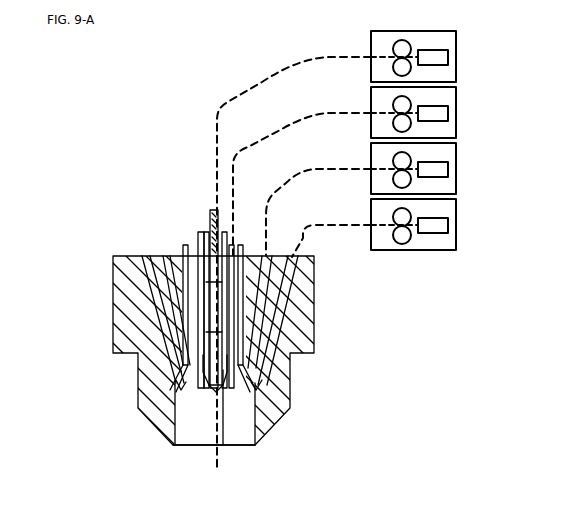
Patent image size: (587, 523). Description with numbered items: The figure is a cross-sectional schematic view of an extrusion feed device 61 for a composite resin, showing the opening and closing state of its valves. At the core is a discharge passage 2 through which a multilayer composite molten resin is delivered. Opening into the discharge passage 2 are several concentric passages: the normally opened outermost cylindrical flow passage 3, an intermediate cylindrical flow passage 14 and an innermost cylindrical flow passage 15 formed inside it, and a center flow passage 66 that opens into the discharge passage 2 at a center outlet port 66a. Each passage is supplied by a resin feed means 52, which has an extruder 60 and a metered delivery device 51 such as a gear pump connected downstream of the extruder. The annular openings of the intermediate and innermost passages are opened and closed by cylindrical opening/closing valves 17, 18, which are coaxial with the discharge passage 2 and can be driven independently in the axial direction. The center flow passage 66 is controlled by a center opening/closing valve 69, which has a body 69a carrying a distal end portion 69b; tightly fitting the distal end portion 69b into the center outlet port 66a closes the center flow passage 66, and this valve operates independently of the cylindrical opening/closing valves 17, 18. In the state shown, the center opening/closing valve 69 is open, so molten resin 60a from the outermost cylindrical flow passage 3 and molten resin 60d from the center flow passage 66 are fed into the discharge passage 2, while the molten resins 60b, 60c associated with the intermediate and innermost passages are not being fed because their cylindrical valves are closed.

The discharge passage 2 is at (236, 440).
The outermost cylindrical flow passage 3 is at (183, 372).
The intermediate cylindrical flow passage 14 is at (143, 262).
The innermost cylindrical flow passage 15 is at (191, 247).
The cylindrical opening/closing valve 17 is at (182, 246).
The cylindrical opening/closing valve 18 is at (200, 233).
The metered delivery device 51 is at (408, 47).
The resin feed means 52 is at (456, 57).
The control valve 60 is at (437, 47).
The molten resin 60a is at (326, 222).
The molten resin 60b is at (306, 177).
The molten resin 60c is at (290, 130).
The molten resin 60d is at (282, 75).
The extrusion feed device 61 is at (166, 438).
The center flow passage 66 is at (203, 362).
The center outlet port 66a is at (203, 374).
The center opening/closing valve 69 is at (203, 208).
The body 69a is at (210, 287).
The distal end portion 69b is at (210, 336).